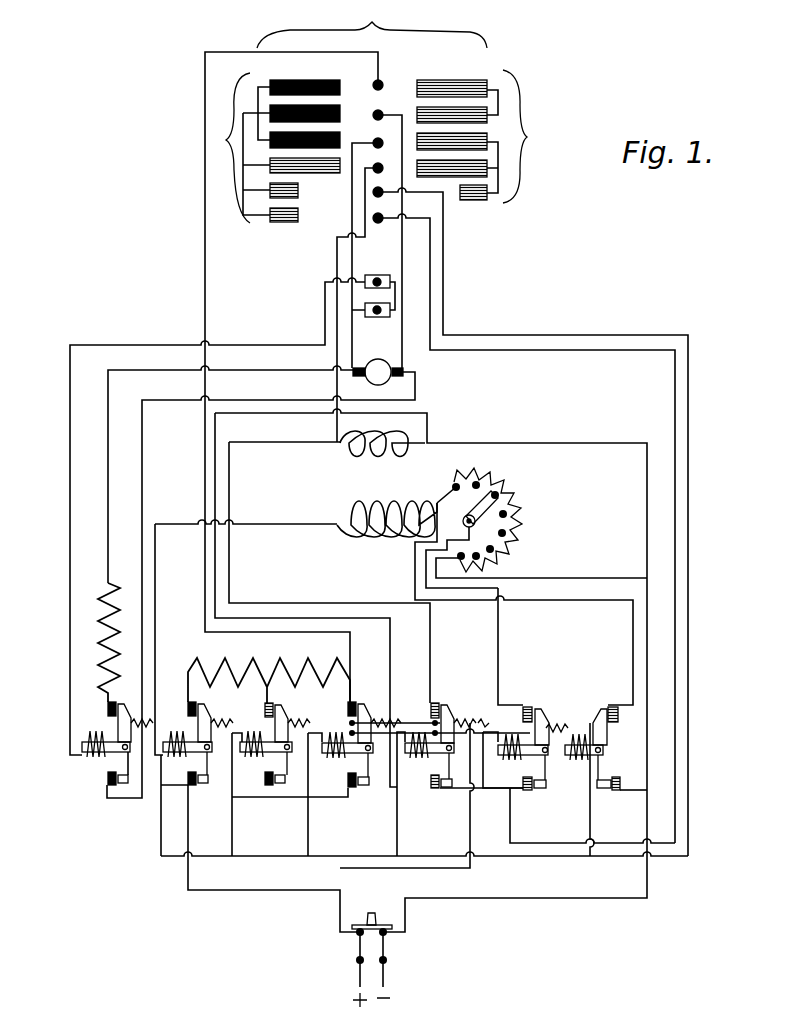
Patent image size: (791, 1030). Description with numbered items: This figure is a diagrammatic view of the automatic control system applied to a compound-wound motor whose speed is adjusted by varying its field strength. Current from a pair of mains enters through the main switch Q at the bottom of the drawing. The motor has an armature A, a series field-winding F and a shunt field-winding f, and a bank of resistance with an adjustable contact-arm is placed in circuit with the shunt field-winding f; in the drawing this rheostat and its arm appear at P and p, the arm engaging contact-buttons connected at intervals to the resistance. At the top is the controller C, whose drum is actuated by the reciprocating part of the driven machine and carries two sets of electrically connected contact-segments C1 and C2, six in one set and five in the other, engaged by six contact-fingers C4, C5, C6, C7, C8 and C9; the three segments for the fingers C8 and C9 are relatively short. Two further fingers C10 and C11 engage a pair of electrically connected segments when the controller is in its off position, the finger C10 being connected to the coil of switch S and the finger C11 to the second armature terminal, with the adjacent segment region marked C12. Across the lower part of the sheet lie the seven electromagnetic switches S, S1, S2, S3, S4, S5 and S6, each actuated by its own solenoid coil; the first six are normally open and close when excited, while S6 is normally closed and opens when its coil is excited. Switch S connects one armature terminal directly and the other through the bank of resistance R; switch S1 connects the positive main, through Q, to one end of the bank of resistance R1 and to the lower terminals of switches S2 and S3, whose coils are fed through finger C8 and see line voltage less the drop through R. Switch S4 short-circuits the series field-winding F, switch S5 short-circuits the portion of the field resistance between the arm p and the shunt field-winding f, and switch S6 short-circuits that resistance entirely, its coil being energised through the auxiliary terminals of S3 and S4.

The controller C is at (372, 25).
The set of contact-segments C1 is at (272, 148).
The set of contact-segments C2 is at (486, 136).
The contact-finger C4 is at (387, 78).
The contact-finger C5 is at (384, 107).
The contact-finger C6 is at (374, 136).
The contact-finger C7 is at (380, 160).
The contact-finger C8 is at (380, 184).
The contact-finger C9 is at (380, 211).
The contact-finger C10 is at (374, 273).
The contact-finger C11 is at (377, 303).
The auxiliary contact C12 is at (368, 318).
The armature A is at (382, 379).
The series field-winding F is at (382, 453).
The shunt field-winding f is at (387, 531).
The rheostat resistance P is at (512, 519).
The rheostat arm p is at (480, 525).
The bank of resistance R is at (99, 642).
The bank of resistance R1 is at (269, 670).
The electromagnetic switch S is at (114, 744).
The electromagnetic switch S1 is at (196, 736).
The electromagnetic switch S2 is at (274, 739).
The electromagnetic switch S3 is at (355, 740).
The electromagnetic switch S4 is at (444, 737).
The electromagnetic switch S5 is at (526, 730).
The electromagnetic switch S6 is at (592, 730).
The main switch Q is at (383, 960).